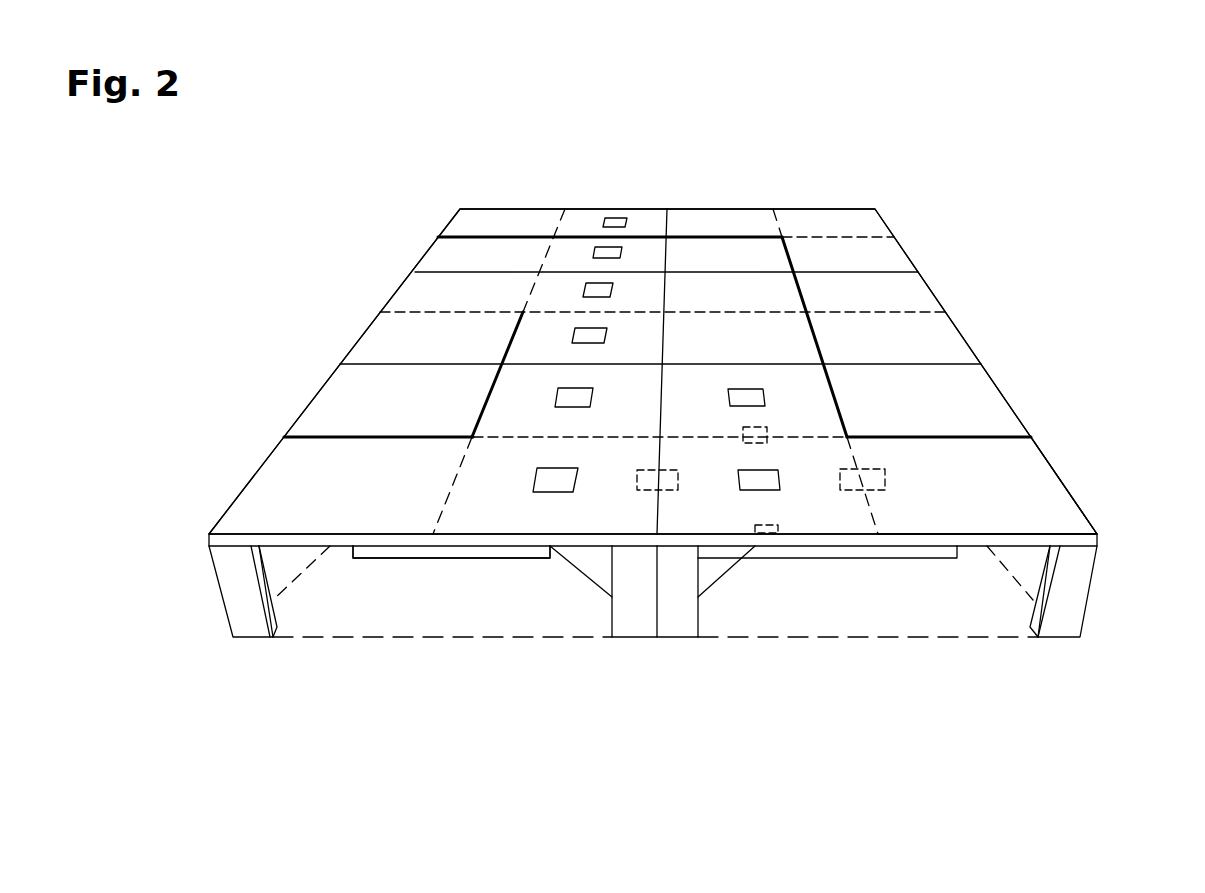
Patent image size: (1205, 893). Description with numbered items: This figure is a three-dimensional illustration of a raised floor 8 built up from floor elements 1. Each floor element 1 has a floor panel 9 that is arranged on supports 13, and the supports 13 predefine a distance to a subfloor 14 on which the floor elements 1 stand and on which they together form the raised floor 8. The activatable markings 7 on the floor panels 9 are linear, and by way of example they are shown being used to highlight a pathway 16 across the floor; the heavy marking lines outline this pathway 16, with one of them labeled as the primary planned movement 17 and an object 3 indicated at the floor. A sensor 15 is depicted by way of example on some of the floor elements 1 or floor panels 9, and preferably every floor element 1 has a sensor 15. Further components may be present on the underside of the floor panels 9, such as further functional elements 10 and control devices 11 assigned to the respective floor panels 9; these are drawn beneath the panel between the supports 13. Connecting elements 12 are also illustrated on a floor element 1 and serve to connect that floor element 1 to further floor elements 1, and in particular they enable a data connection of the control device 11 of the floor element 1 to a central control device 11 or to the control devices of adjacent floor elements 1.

The floor element 1 is at (513, 225).
The object 3 is at (455, 553).
The activatable marking 7 is at (897, 310).
The raised floor 8 is at (982, 158).
The floor panel 9 is at (1013, 463).
The functional element 10 is at (472, 626).
The control device 11 is at (522, 553).
The connecting element 12 is at (762, 443).
The support 13 is at (233, 602).
The subfloor 14 is at (403, 637).
The sensor 15 is at (590, 290).
The pathway 16 is at (1002, 483).
The primary planned movement 17 is at (815, 335).